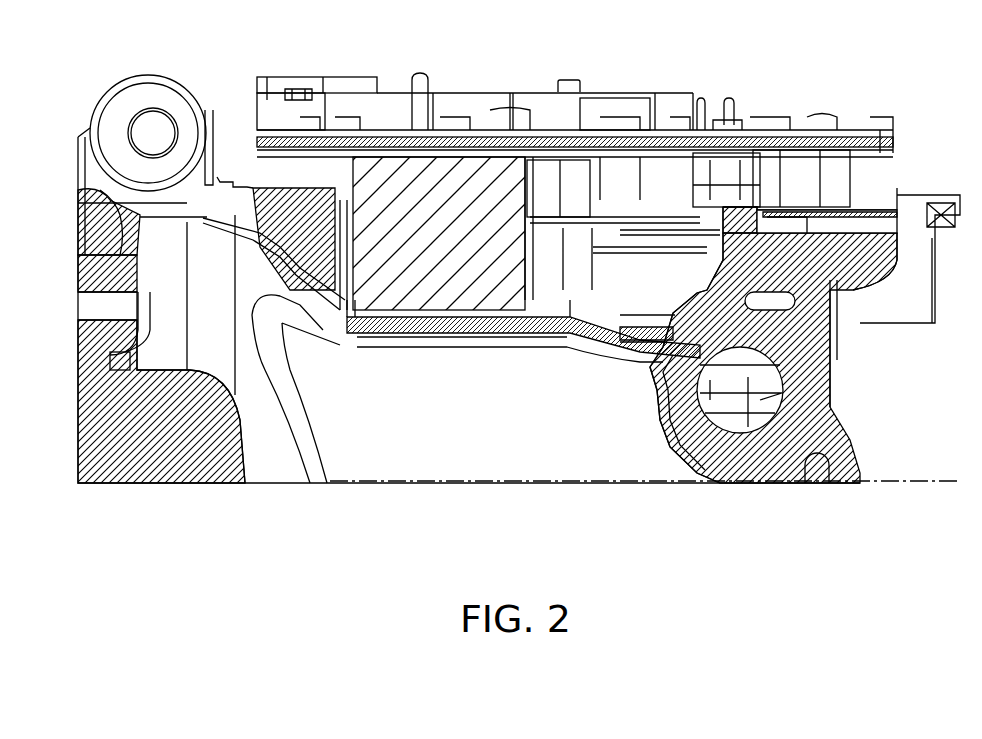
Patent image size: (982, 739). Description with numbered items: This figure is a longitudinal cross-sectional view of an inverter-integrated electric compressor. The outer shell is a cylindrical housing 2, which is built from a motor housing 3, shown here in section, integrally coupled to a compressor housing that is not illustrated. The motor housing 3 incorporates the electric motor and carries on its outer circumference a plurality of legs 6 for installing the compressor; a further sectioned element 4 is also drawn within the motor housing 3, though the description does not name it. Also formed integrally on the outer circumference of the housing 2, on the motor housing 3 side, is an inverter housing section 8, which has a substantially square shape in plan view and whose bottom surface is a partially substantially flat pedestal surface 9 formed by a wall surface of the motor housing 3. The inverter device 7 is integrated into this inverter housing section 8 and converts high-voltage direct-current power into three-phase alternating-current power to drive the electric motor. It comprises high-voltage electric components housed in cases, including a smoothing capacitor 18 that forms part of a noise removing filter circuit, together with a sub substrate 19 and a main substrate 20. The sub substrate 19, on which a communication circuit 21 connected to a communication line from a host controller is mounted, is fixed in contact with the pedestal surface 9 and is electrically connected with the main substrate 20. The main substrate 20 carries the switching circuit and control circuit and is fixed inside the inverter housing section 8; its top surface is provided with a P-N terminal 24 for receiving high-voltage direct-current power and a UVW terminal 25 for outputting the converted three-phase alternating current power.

The housing 2 is at (210, 483).
The motor housing 3 is at (530, 456).
The bearing bore 4 is at (725, 425).
The legs 6 is at (150, 100).
The inverter device 7 is at (740, 108).
The inverter housing section 8 is at (895, 237).
The pedestal surface 9 is at (554, 215).
The smoothing capacitor 18 is at (447, 190).
The sub substrate 19 is at (680, 215).
The main substrate 20 is at (610, 180).
The communication circuit 21 is at (577, 133).
The P-N terminal 24 is at (420, 74).
The UVW terminal 25 is at (357, 105).